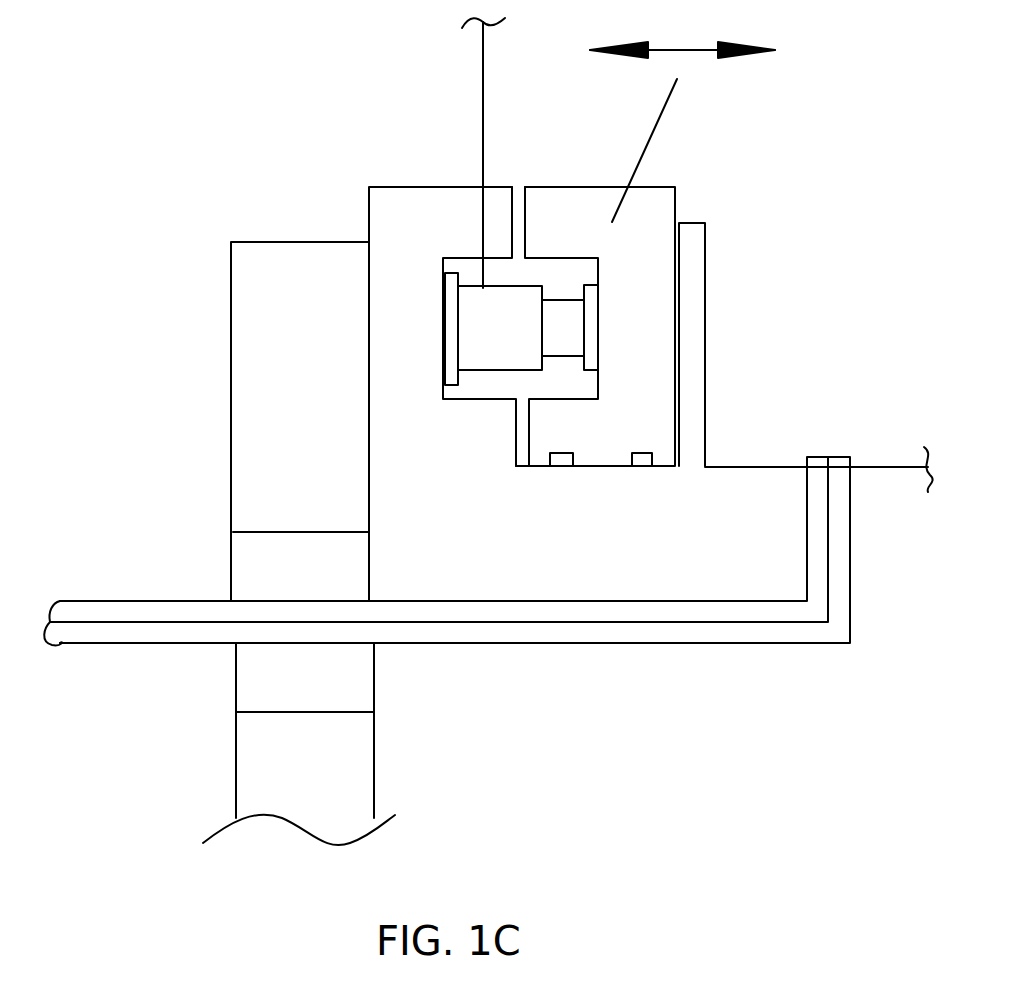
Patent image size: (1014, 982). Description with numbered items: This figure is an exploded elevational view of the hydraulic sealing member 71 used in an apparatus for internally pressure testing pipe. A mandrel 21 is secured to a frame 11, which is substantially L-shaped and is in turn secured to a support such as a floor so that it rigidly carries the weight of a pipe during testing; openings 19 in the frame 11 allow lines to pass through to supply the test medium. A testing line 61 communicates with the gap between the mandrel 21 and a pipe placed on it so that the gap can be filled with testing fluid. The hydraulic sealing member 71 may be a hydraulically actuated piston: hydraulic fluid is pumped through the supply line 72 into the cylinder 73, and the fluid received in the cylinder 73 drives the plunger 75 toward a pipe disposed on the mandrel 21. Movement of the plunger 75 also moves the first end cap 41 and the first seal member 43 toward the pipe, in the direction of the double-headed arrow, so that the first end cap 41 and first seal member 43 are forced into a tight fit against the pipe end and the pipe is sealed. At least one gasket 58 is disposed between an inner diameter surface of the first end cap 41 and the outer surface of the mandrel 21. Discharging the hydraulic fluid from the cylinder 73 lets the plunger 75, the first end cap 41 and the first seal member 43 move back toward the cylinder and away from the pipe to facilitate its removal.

The frame 11 is at (374, 788).
The openings 19 is at (374, 675).
The mandrel 21 is at (885, 467).
The first end cap 41 is at (680, 197).
The first seal member 43 is at (705, 307).
The gasket 58 is at (550, 457).
The testing line 61 is at (572, 648).
The hydraulic sealing member 71 is at (523, 290).
The supply line 72 is at (483, 103).
The cylinder 73 is at (487, 373).
The plunger 75 is at (563, 358).